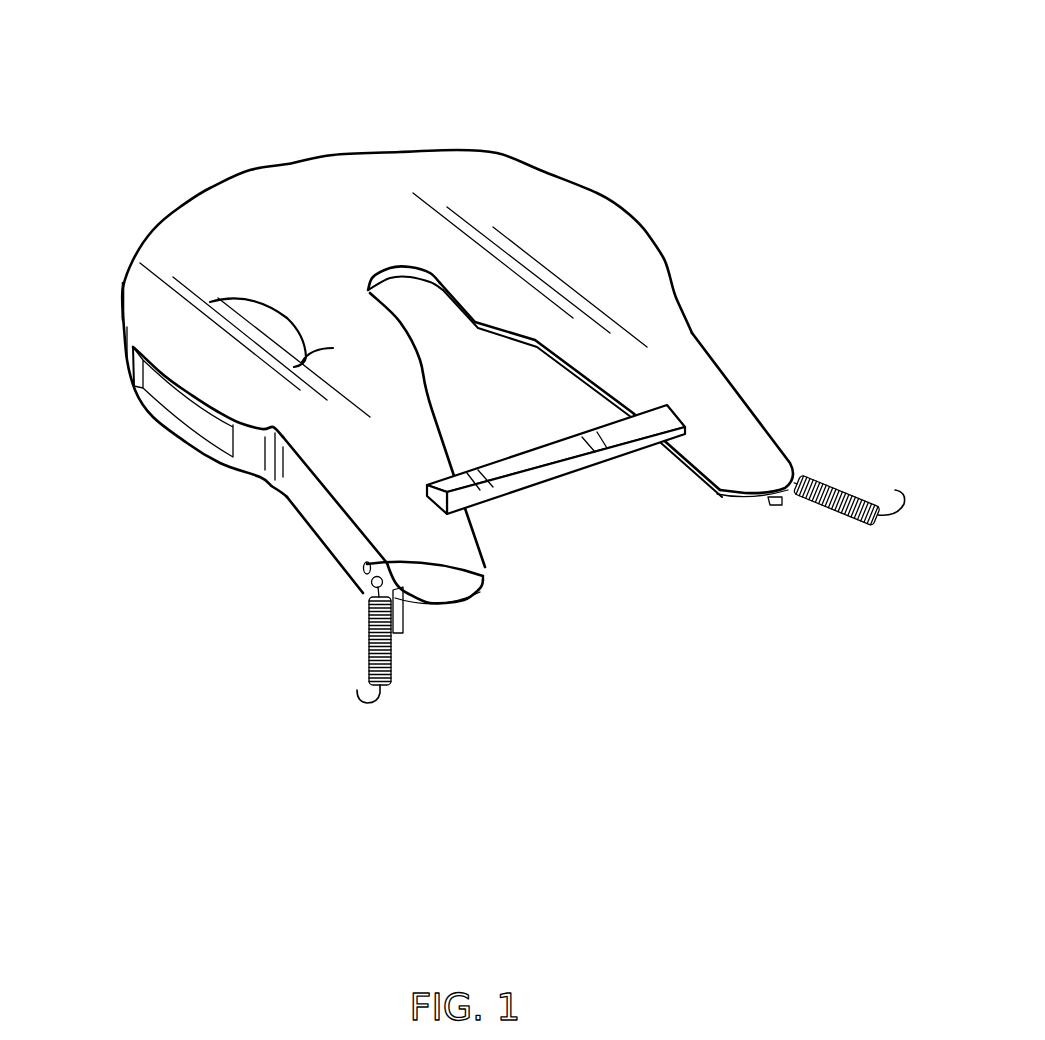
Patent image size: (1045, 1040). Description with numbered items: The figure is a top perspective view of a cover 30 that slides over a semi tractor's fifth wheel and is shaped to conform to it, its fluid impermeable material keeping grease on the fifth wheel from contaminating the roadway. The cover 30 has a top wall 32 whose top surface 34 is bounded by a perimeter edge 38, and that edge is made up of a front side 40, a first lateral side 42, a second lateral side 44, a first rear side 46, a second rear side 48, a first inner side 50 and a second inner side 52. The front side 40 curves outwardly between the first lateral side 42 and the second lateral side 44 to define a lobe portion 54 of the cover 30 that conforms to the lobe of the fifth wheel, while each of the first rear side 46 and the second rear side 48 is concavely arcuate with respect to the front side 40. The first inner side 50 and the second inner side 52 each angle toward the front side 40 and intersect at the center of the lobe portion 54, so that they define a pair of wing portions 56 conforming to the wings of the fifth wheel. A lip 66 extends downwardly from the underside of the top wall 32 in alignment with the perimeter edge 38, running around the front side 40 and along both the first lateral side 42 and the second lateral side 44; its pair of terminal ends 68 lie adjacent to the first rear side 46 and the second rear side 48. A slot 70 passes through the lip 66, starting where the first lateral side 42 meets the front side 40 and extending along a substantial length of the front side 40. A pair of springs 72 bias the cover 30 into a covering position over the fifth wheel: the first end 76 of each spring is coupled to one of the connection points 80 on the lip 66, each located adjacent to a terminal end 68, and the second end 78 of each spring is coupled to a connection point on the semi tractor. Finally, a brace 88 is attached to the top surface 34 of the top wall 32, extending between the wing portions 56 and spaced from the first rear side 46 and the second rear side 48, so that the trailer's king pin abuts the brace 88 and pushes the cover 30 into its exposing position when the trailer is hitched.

The cover 30 is at (523, 197).
The top wall 32 is at (398, 207).
The top surface 34 is at (220, 299).
The perimeter edge 38 is at (122, 285).
The front side 40 is at (297, 161).
The first lateral side 42 is at (327, 490).
The second lateral side 44 is at (720, 368).
The first rear side 46 is at (463, 597).
The second rear side 48 is at (748, 497).
The first inner side 50 is at (477, 540).
The second inner side 52 is at (690, 470).
The lobe portion 54 is at (190, 172).
The wing portions 56 is at (400, 420).
The lip 66 is at (257, 460).
The terminal ends 68 is at (400, 580).
The slot 70 is at (154, 425).
The springs 72 is at (840, 487).
The first end 76 is at (370, 582).
The second end 78 is at (358, 692).
The connection points 80 is at (487, 577).
The brace 88 is at (582, 450).